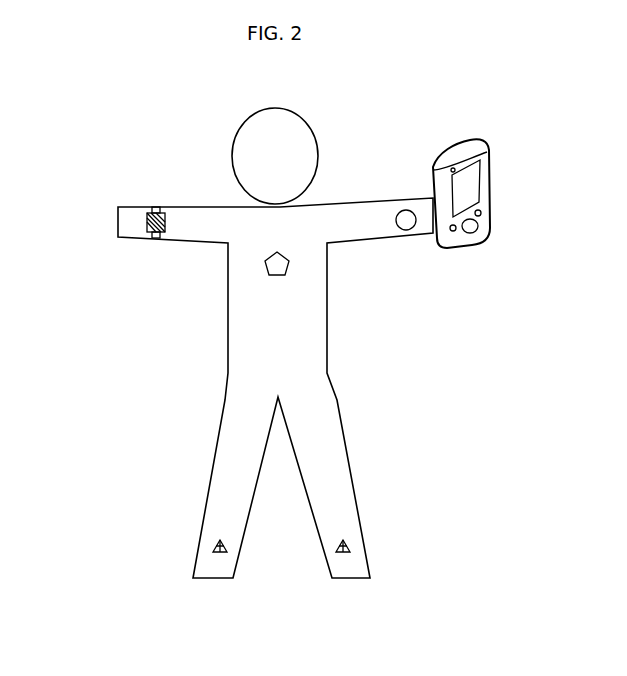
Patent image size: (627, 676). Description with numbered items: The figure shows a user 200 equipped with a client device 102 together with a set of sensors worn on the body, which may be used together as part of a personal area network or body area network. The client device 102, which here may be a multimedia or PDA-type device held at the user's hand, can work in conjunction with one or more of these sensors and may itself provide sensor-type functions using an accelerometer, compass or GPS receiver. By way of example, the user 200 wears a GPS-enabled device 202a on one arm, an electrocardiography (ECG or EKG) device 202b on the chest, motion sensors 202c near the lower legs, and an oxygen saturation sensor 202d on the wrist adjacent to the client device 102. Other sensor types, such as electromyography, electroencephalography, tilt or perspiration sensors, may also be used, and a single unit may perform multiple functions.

The user 200 is at (148, 135).
The client device 102 is at (492, 192).
The GPS-enabled device 202a is at (146, 233).
The electrocardiography (ECG or EKG) device 202b is at (289, 257).
The motion sensors 202c is at (213, 550).
The oxygen saturation sensor 202d is at (407, 231).